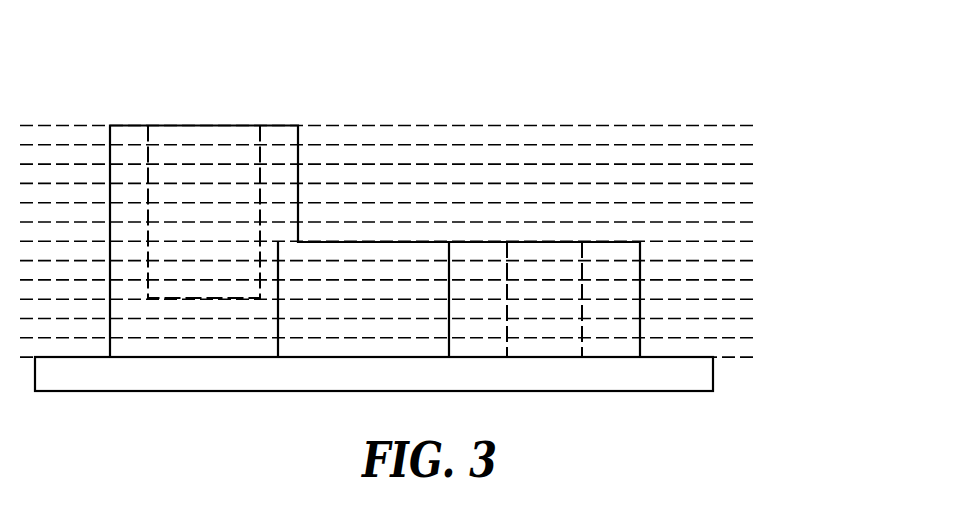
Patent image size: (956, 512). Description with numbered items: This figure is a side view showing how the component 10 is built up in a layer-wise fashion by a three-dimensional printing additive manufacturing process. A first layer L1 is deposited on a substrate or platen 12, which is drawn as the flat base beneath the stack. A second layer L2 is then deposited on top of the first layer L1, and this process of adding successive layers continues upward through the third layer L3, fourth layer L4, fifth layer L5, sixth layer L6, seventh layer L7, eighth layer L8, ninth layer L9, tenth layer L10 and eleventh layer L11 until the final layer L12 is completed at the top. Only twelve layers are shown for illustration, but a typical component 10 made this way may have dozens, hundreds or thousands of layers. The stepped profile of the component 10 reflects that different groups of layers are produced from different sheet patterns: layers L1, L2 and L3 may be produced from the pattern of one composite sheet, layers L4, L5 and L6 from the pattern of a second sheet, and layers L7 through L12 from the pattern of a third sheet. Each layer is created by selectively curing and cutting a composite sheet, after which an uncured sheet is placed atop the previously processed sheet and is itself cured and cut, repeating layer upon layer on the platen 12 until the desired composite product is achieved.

The component 10 is at (148, 103).
The substrate or platen 12 is at (201, 375).
The first layer L1 is at (738, 348).
The second layer L2 is at (738, 328).
The third layer L3 is at (738, 309).
The fourth layer L4 is at (738, 290).
The fifth layer L5 is at (738, 270).
The sixth layer L6 is at (738, 251).
The seventh layer L7 is at (738, 232).
The eighth layer L8 is at (738, 212).
The ninth layer L9 is at (738, 193).
The tenth layer L10 is at (738, 174).
The eleventh layer L11 is at (738, 154).
The final layer L12 is at (738, 135).